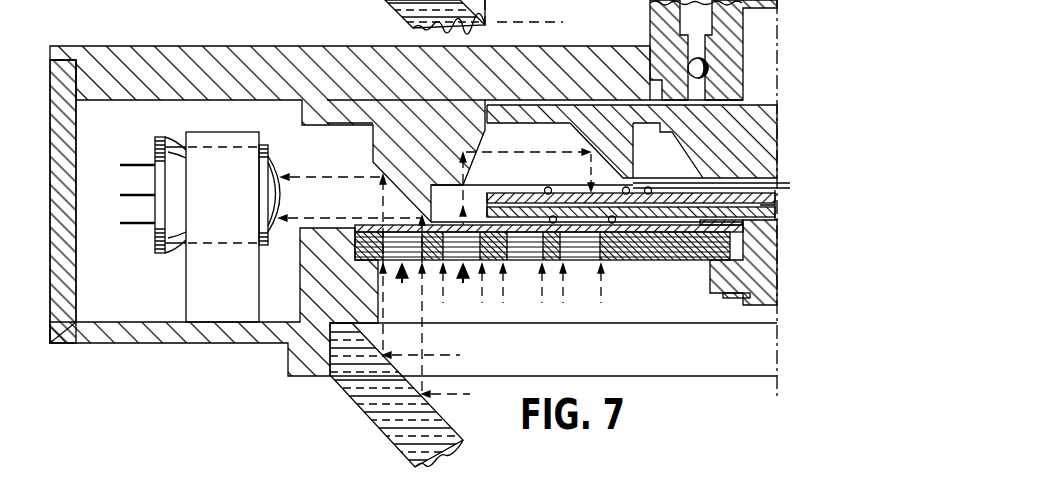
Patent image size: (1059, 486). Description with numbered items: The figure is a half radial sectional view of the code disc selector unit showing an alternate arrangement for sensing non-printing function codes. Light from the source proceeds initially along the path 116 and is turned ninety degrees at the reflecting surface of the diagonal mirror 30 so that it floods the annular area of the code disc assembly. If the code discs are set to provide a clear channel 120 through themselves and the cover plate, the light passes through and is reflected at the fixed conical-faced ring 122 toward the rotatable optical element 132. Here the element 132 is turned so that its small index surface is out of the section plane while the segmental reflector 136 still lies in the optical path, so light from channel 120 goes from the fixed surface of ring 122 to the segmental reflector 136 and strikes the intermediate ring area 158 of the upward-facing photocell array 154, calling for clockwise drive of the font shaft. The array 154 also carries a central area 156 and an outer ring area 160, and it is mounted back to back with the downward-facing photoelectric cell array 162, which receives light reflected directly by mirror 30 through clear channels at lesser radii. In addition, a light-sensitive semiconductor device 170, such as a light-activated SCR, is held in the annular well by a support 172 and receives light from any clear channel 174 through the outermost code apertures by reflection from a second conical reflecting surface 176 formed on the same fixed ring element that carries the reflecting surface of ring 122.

The mirror 30 is at (378, 418).
The light path from source 116 is at (509, 1).
The clear channel 120 is at (549, 265).
The fixed conical-faced ring 122 is at (478, 139).
The optical element 132 is at (788, 149).
The segmental reflector 136 is at (583, 136).
The upward-facing photocell array 154 is at (768, 198).
The central photosensitive area 156 is at (757, 188).
The intermediate ring area 158 is at (580, 205).
The outer ring area 160 is at (518, 192).
The photoelectric cell array 162 is at (767, 220).
The light-sensitive semiconductor device 170 is at (270, 172).
The support 172 is at (200, 280).
The clear channel 174 is at (492, 287).
The second conical reflecting surface 176 is at (408, 199).